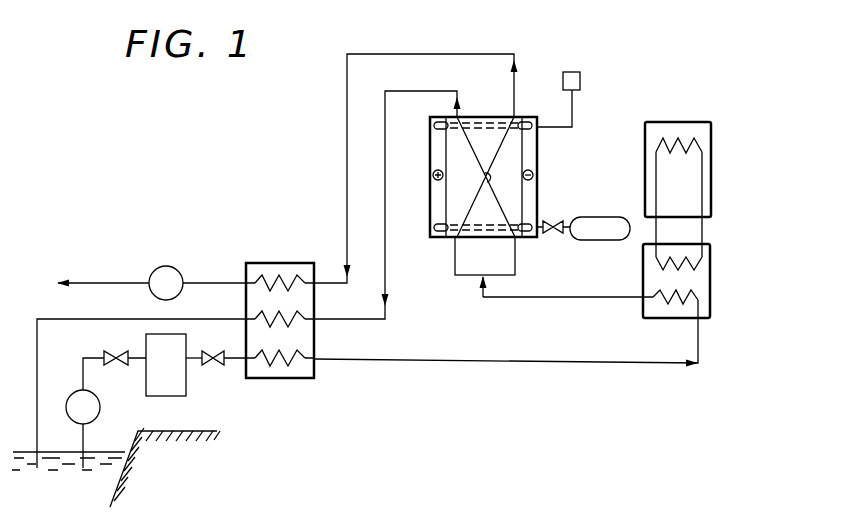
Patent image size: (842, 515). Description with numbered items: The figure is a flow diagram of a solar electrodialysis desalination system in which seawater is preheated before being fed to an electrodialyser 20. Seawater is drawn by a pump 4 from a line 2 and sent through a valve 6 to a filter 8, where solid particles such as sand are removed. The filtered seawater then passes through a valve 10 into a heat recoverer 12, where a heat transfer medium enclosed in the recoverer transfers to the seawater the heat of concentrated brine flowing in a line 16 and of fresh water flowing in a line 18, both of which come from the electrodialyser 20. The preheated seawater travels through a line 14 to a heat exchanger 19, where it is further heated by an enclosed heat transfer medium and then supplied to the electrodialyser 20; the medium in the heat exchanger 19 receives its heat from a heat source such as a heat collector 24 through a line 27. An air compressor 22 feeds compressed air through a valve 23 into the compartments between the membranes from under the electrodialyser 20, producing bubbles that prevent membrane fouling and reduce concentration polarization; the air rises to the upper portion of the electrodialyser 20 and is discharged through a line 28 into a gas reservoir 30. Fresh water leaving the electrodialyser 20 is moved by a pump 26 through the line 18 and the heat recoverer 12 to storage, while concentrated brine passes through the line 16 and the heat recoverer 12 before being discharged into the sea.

The line 2 is at (85, 440).
The pump 4 is at (96, 399).
The valve 6 is at (117, 352).
The filter 8 is at (186, 384).
The valve 10 is at (216, 347).
The heat recoverer 12 is at (267, 378).
The line 14 is at (350, 361).
The line 16 is at (348, 321).
The line 18 is at (333, 284).
The heat exchanger 19 is at (711, 262).
The electrodialyser 20 is at (527, 117).
The air compressor 22 is at (597, 216).
The valve 23 is at (552, 220).
The heat collector 24 is at (711, 171).
The pump 26 is at (177, 272).
The line 27 is at (703, 228).
The line 28 is at (572, 112).
The gas reservoir 30 is at (580, 79).